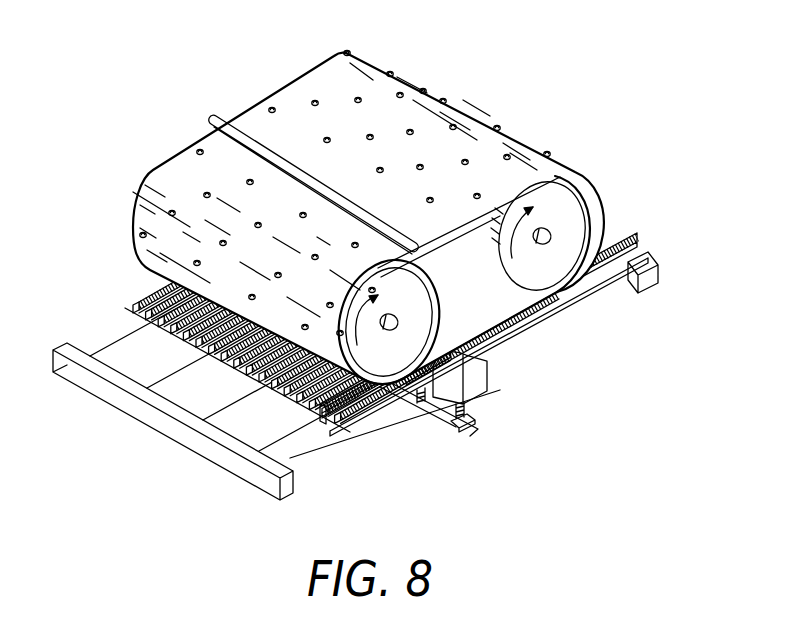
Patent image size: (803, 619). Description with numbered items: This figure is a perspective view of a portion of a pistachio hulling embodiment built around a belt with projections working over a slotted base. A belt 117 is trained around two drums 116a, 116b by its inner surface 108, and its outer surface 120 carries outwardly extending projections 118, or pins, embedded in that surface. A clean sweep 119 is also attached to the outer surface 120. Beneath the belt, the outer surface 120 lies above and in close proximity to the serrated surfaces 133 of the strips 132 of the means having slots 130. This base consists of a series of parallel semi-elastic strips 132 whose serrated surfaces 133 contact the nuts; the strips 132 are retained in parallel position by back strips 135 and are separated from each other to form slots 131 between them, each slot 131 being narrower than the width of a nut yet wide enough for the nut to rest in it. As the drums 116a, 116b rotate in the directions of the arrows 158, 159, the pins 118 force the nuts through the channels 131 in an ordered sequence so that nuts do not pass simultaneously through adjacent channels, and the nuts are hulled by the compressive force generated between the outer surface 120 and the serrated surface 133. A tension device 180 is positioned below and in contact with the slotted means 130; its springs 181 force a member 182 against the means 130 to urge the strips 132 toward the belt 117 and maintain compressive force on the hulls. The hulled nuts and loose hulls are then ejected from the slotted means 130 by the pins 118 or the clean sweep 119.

The inner surface 108 is at (520, 312).
The drum 116a is at (410, 327).
The drum 116b is at (553, 277).
The belt 117 is at (497, 345).
The projections 118 is at (345, 58).
The clean sweep 119 is at (220, 121).
The outer surface 120 is at (172, 162).
The means having slots 130 is at (233, 372).
The slots 131 is at (313, 417).
The strips 132 is at (302, 420).
The serrated surfaces 133 is at (651, 197).
The back strips 135 is at (360, 432).
The arrow 158 is at (533, 207).
The arrow 159 is at (382, 293).
The tension device 180 is at (465, 409).
The springs 181 is at (417, 403).
The member 182 is at (487, 372).